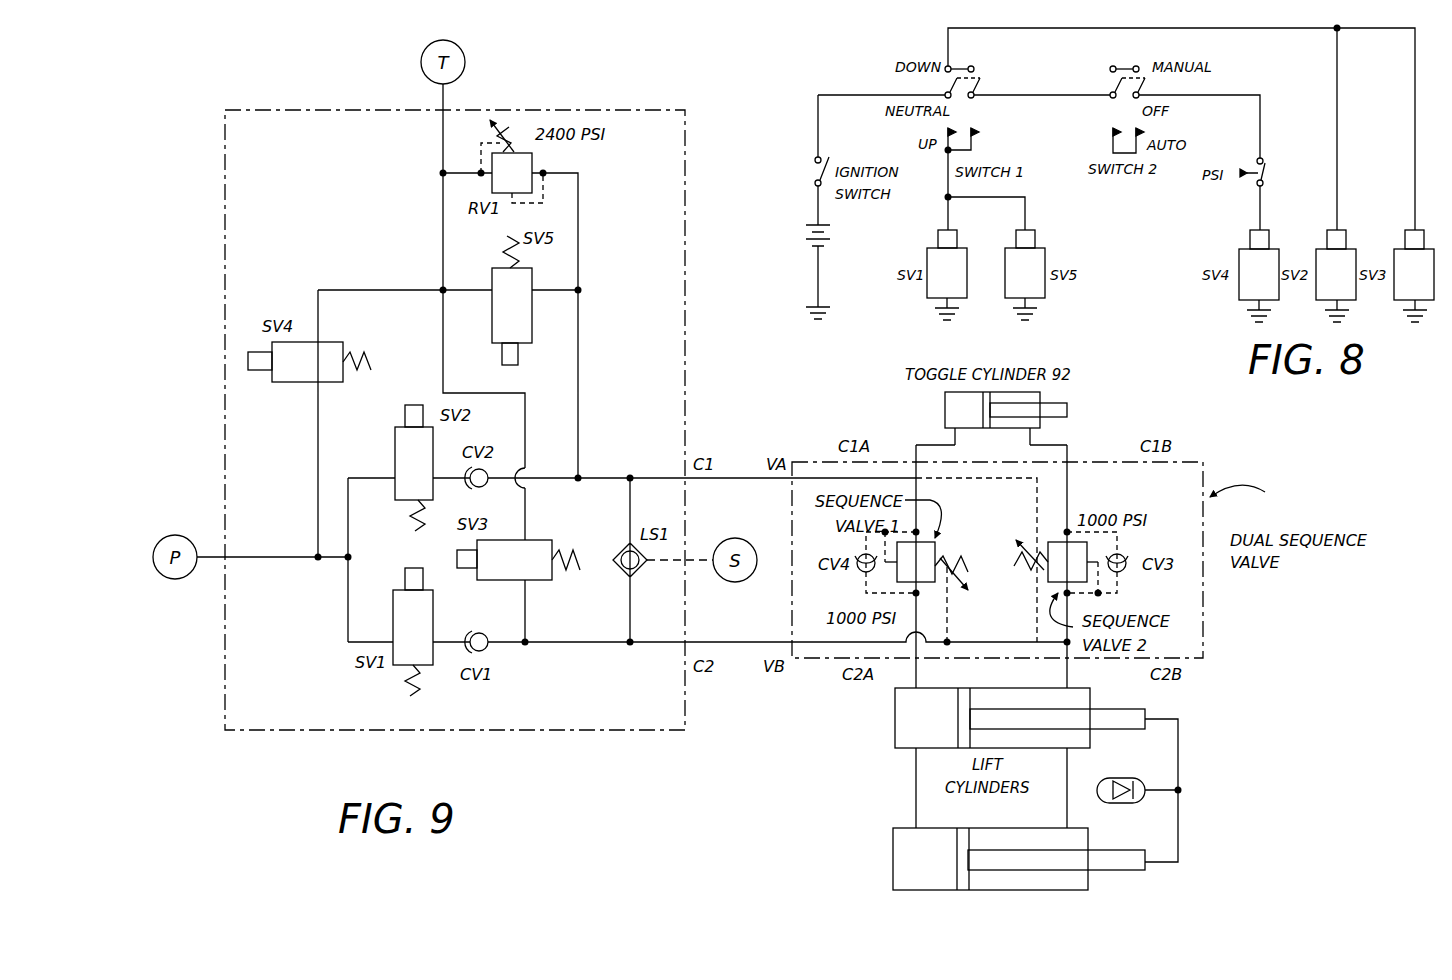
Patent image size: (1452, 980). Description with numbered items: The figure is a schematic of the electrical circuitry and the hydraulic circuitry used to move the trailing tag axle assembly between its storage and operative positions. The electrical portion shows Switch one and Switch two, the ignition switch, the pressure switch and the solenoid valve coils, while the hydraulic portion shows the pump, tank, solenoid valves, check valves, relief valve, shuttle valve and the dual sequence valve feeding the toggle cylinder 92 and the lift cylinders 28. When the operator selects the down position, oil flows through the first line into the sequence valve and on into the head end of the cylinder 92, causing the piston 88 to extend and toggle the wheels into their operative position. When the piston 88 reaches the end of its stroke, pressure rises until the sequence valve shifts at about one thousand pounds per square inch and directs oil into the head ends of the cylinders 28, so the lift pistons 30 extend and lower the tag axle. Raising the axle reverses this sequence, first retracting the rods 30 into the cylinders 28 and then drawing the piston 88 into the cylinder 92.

The cylinder 92 is at (955, 413).
The piston 88 is at (1075, 410).
The hydraulic cylinders 28 is at (895, 719).
The hydraulic rods 30 is at (1048, 706).